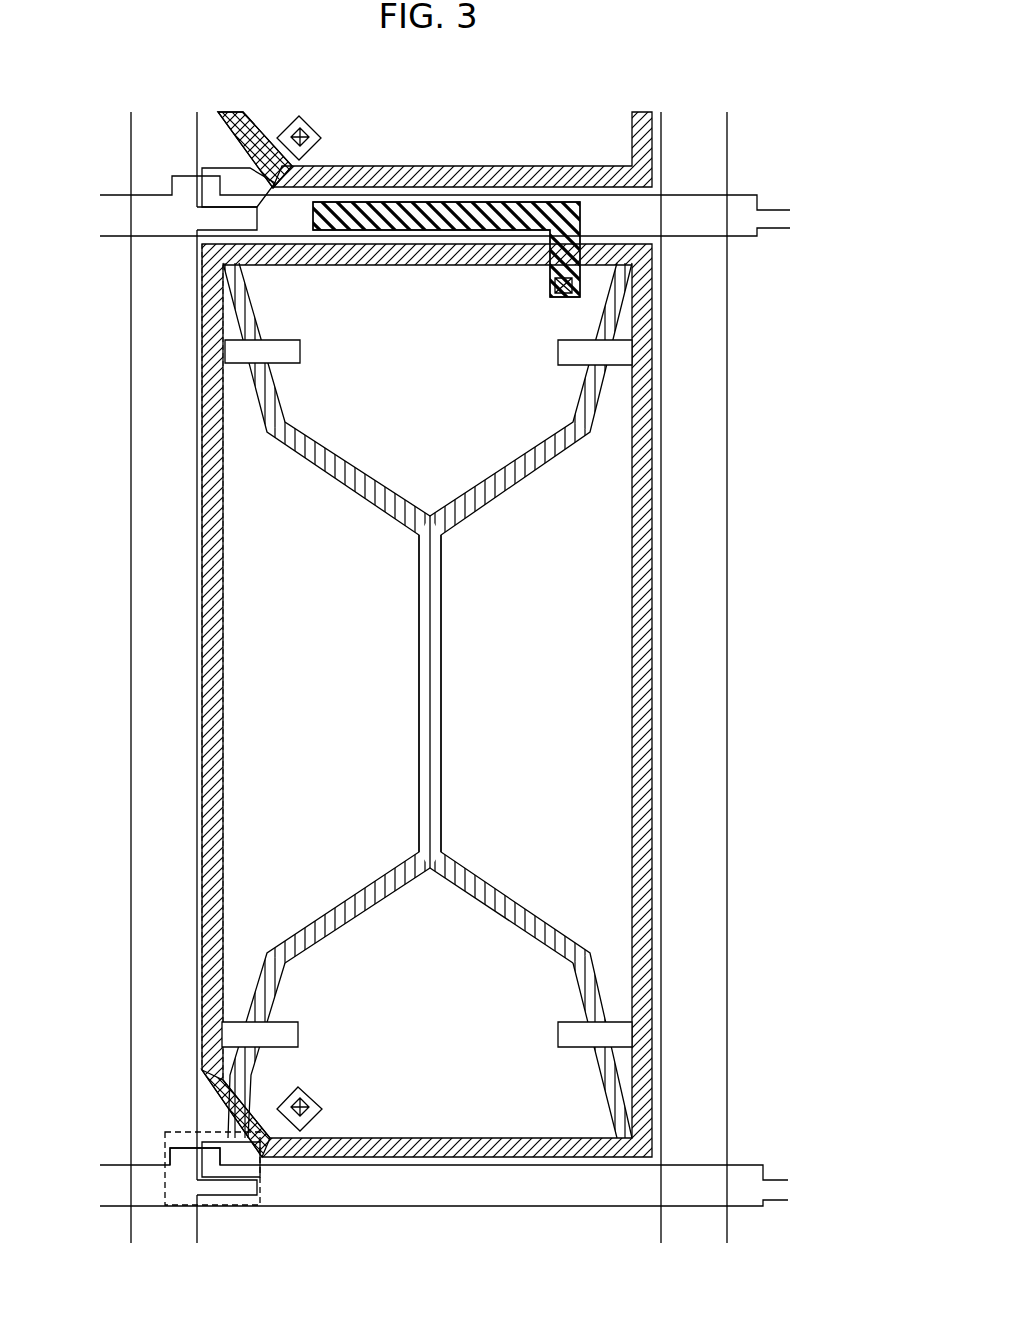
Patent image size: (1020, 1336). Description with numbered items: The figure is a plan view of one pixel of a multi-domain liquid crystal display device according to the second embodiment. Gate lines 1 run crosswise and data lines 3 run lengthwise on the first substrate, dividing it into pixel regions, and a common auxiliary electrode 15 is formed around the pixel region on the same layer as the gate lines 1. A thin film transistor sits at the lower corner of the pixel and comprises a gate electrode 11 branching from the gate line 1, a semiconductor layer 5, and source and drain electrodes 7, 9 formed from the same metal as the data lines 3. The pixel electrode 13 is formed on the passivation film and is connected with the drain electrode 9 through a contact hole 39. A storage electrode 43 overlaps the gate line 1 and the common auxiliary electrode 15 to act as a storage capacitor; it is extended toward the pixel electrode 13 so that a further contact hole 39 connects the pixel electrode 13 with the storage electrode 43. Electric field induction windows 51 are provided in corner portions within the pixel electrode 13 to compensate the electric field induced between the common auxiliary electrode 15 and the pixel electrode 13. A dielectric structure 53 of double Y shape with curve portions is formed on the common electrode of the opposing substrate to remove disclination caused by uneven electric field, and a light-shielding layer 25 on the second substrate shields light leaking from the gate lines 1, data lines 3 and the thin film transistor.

The gate line 1 is at (105, 213).
The data line 3 is at (150, 655).
The semiconductor layer 5 is at (187, 1130).
The source electrode 7 is at (220, 1195).
The drain electrode 9 is at (260, 1168).
The gate electrode 11 is at (177, 1150).
The pixel electrode 13 is at (207, 777).
The common auxiliary electrode 15 is at (661, 686).
The light-shielding layer 25 is at (205, 527).
The contact hole 39 is at (307, 1115).
The storage electrode 43 is at (455, 210).
The electric field induction window 51 is at (558, 350).
The dielectric structure 53 is at (425, 686).